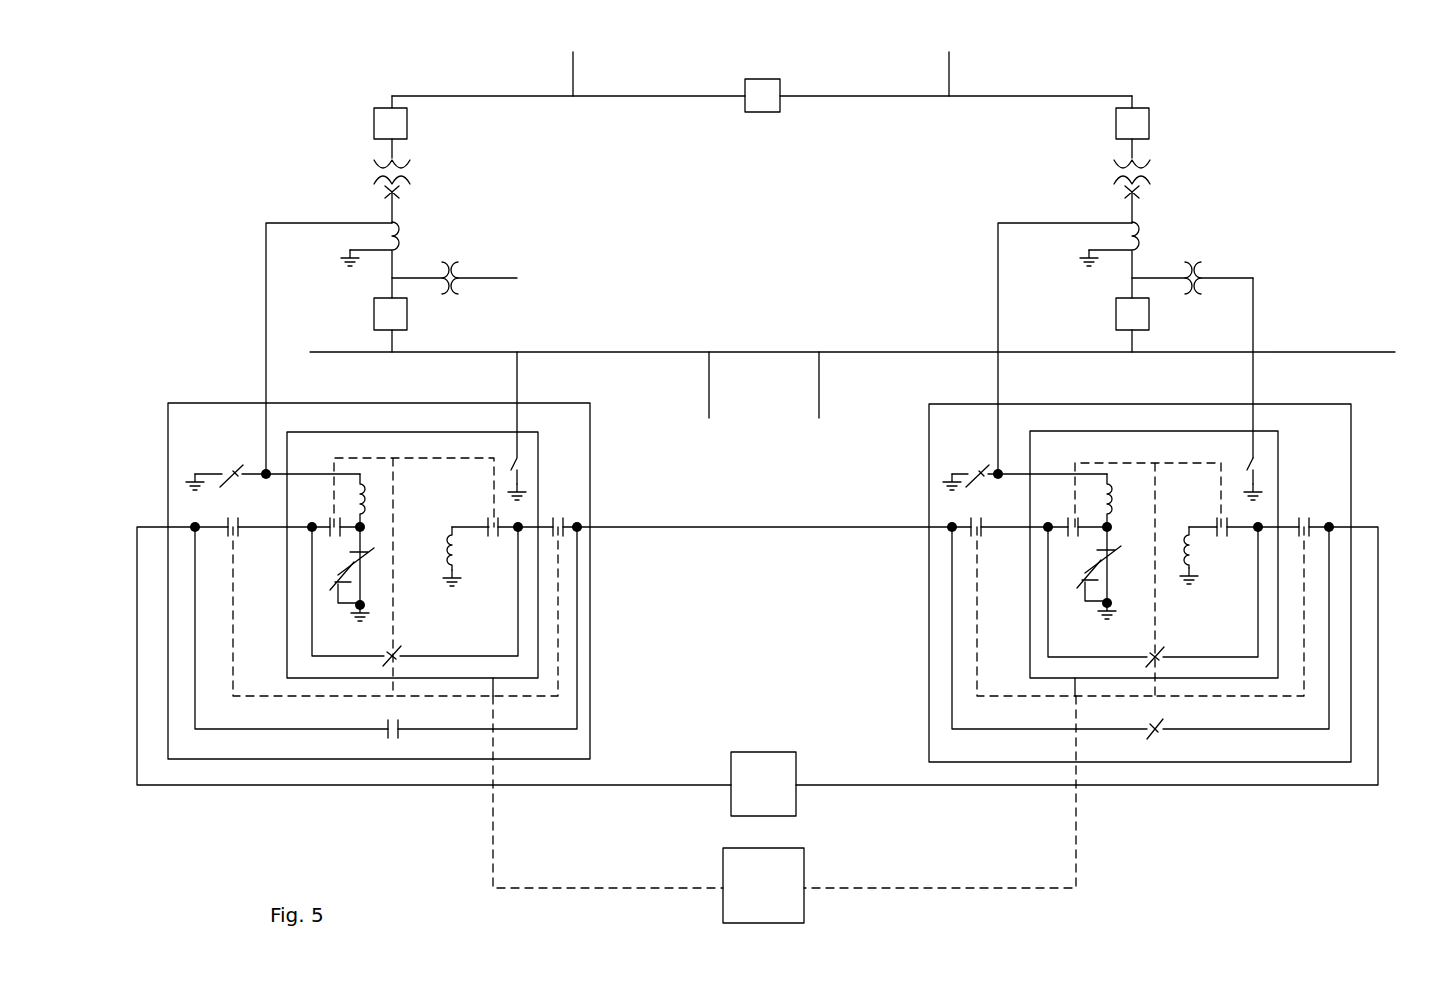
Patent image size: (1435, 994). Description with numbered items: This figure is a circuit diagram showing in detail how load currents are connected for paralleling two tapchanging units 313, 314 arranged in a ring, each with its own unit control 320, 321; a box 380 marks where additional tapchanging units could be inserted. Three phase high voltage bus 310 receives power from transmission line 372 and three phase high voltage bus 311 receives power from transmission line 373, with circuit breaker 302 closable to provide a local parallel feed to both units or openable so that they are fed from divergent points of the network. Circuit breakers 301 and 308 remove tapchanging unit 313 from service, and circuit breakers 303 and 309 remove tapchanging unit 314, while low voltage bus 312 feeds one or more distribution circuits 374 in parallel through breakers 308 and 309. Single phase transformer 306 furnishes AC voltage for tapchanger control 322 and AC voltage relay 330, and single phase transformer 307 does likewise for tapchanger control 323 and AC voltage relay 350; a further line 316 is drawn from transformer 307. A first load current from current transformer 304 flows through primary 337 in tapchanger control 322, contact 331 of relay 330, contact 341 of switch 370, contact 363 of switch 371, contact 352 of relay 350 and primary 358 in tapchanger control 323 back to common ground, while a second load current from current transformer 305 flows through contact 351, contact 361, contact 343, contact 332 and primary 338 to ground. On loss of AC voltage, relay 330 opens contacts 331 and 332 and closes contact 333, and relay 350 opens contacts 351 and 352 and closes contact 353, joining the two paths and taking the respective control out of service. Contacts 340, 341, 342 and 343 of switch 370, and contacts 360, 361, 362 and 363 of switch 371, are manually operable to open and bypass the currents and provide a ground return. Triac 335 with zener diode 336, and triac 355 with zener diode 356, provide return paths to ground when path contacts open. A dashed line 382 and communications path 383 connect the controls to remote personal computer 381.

The circuit breaker 301 is at (424, 117).
The circuit breaker 302 is at (793, 92).
The circuit breaker 303 is at (1166, 117).
The current transformer 304 is at (408, 258).
The current transformer 305 is at (1104, 342).
The single phase transformer 306 is at (452, 253).
The single phase transformer 307 is at (1180, 256).
The circuit breaker 308 is at (424, 325).
The circuit breaker 309 is at (1166, 325).
The three phase high voltage bus 310 is at (667, 100).
The three phase high voltage bus 311 is at (890, 100).
The low voltage bus 312 is at (868, 346).
The tapchanging unit 313 is at (370, 306).
The tapchanging unit 314 is at (1165, 181).
The line 316 is at (1287, 368).
The unit control 320 is at (411, 579).
The unit control 321 is at (1172, 581).
The tapchanger control 322 is at (440, 549).
The tapchanger control 323 is at (1189, 552).
The AC voltage relay 330 is at (517, 460).
The contact 331 is at (334, 521).
The contact 332 is at (496, 525).
The contact 333 is at (419, 649).
The triac 335 is at (359, 553).
The zener diode 336 is at (343, 576).
The primary of auxiliary current transformer 337 is at (380, 501).
The primary of auxiliary current transformer 338 is at (438, 554).
The contact 340 is at (234, 469).
The contact 341 is at (257, 515).
The contact 342 is at (424, 722).
The contact 343 is at (558, 515).
The AC voltage relay 350 is at (1253, 456).
The contact 351 is at (1080, 521).
The contact 352 is at (1223, 534).
The contact 353 is at (1183, 651).
The triac 355 is at (1106, 551).
The zener diode 356 is at (1090, 574).
The primary of auxiliary current transformer 358 is at (1166, 539).
The contact 360 is at (978, 469).
The contact 361 is at (1001, 515).
The contact 362 is at (1181, 722).
The contact 363 is at (1306, 515).
The switch 370 is at (236, 650).
The switch 371 is at (980, 650).
The transmission line 372 is at (607, 74).
The transmission line 373 is at (985, 74).
The sub-transmission or distribution circuit 374 is at (797, 385).
The box 380 is at (798, 783).
The remote personal computer 381 is at (797, 885).
The control line 382 is at (608, 783).
The communications path 383 is at (975, 783).